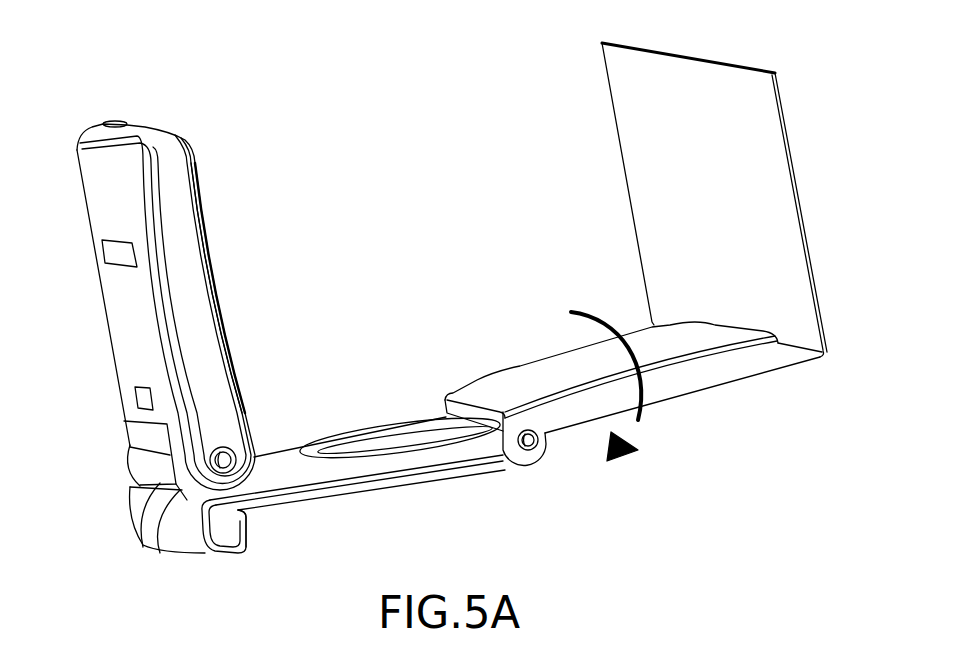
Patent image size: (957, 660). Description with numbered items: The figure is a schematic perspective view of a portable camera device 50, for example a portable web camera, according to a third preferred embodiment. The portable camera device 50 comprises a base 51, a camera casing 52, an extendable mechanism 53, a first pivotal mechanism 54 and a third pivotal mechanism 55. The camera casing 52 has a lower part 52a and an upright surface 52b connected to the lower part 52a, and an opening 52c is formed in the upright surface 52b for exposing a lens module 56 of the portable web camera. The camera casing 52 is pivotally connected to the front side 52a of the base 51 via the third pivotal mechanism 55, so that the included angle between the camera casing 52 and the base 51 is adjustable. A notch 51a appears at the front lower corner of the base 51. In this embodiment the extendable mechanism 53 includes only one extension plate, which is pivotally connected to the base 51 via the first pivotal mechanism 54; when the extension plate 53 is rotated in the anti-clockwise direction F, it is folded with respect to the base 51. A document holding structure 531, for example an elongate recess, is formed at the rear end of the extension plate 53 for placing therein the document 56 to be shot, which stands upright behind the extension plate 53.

The portable camera device 50 is at (535, 47).
The base 51 is at (338, 483).
The notch of base 51a is at (241, 512).
The camera casing 52 is at (128, 327).
The lower part 52a is at (128, 445).
The upright surface 52b is at (228, 322).
The opening 52c is at (214, 230).
The extendable mechanism 53 is at (712, 377).
The document holding structure 531 is at (800, 349).
The first pivotal mechanism 54 is at (540, 446).
The third pivotal mechanism 55 is at (163, 482).
The lens module 56 is at (775, 175).
The anti-clockwise direction F is at (640, 423).